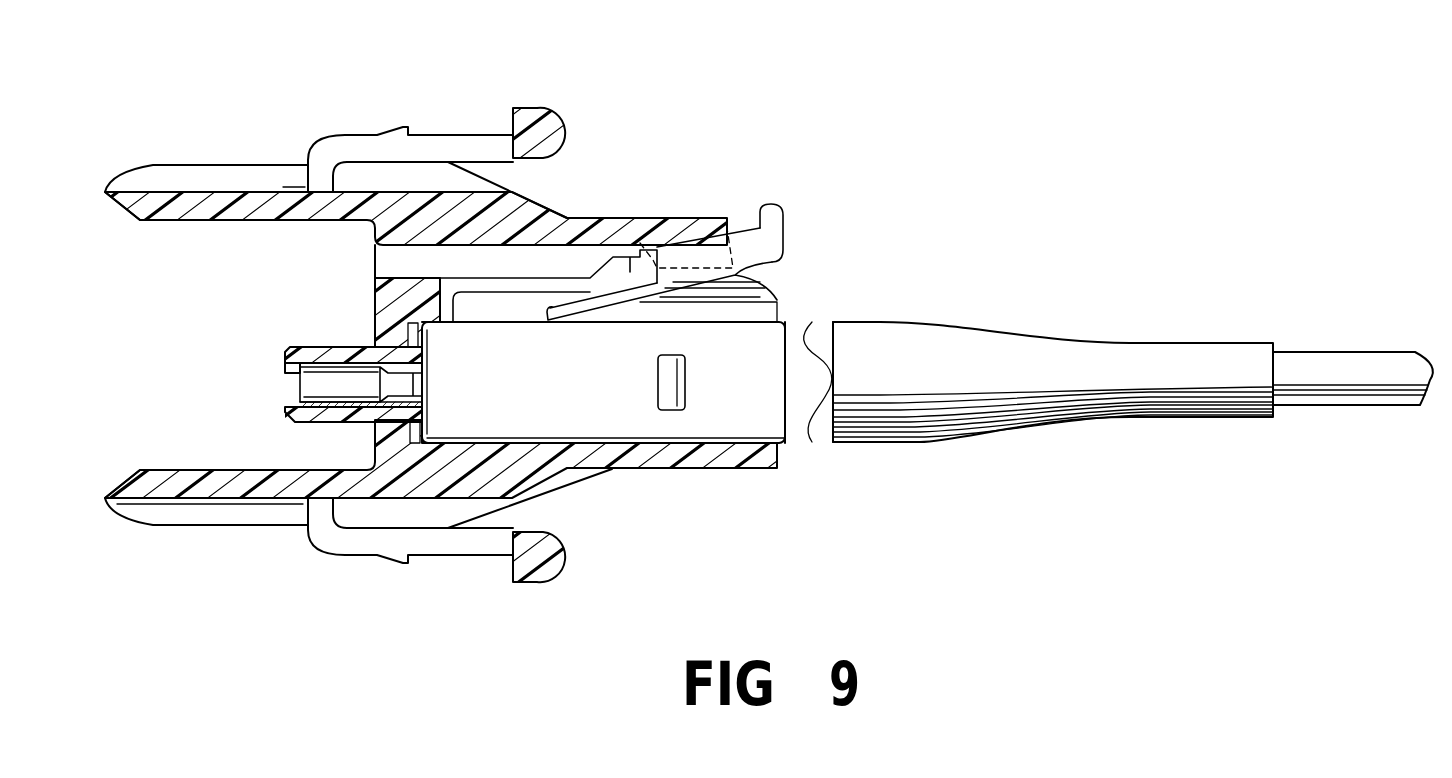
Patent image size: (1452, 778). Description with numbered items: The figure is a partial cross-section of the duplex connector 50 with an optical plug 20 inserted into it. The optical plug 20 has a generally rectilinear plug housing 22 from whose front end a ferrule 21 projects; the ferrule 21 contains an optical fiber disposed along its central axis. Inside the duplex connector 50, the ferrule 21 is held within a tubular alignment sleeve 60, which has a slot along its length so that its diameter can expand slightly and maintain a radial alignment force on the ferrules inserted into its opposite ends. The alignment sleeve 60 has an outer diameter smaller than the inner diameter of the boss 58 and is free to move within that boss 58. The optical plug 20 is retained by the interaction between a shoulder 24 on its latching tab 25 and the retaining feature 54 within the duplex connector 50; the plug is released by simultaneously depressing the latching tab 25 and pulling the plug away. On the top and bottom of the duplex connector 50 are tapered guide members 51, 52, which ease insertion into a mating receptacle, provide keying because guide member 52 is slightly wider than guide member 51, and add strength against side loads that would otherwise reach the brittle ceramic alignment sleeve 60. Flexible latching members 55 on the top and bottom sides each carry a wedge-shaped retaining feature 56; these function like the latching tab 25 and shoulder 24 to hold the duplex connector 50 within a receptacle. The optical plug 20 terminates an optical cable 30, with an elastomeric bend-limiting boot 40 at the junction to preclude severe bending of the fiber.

The optical plug 20 is at (660, 378).
The ferrule 21 is at (377, 380).
The plug housing 22 is at (648, 430).
The shoulder 24 is at (638, 265).
The latching tab 25 is at (770, 212).
The optical cable 30 is at (1333, 355).
The bend-limiting boot 40 is at (1023, 335).
The duplex connector 50 is at (726, 335).
The guide member 51 is at (183, 167).
The guide member 52 is at (183, 522).
The retaining feature 54 is at (640, 243).
The flexible latching member 55 is at (333, 148).
The wedge-shaped retaining feature 56 is at (405, 126).
The boss 58 is at (298, 350).
The alignment sleeve 60 is at (343, 407).